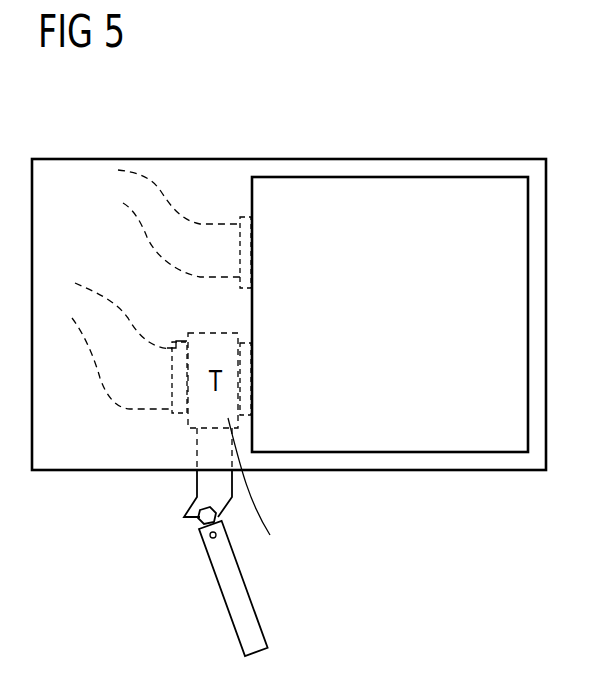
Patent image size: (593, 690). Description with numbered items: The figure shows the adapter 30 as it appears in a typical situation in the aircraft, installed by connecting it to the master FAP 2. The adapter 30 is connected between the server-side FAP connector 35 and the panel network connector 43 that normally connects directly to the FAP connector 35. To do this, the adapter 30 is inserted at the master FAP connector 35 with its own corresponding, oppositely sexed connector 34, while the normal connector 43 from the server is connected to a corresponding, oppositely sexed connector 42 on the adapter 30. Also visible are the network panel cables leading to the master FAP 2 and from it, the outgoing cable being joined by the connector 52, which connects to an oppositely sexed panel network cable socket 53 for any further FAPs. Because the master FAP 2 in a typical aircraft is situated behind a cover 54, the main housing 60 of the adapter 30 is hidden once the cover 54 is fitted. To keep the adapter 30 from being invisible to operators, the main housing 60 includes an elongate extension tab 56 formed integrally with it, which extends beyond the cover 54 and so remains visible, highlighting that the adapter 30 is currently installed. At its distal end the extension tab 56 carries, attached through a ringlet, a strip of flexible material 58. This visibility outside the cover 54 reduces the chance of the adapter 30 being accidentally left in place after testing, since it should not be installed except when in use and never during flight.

The master FAP 2 is at (390, 177).
The adapter 30 is at (192, 432).
The connector 34 is at (299, 430).
The master FAP connector 35 is at (250, 410).
The connector 42 is at (170, 410).
The panel network connector 43 is at (123, 429).
The connector 52 is at (193, 202).
The panel network cable socket 53 is at (242, 217).
The cover 54 is at (72, 158).
The extension tab 56 is at (204, 522).
The strip of flexible material 58 is at (262, 616).
The main housing 60 is at (265, 486).